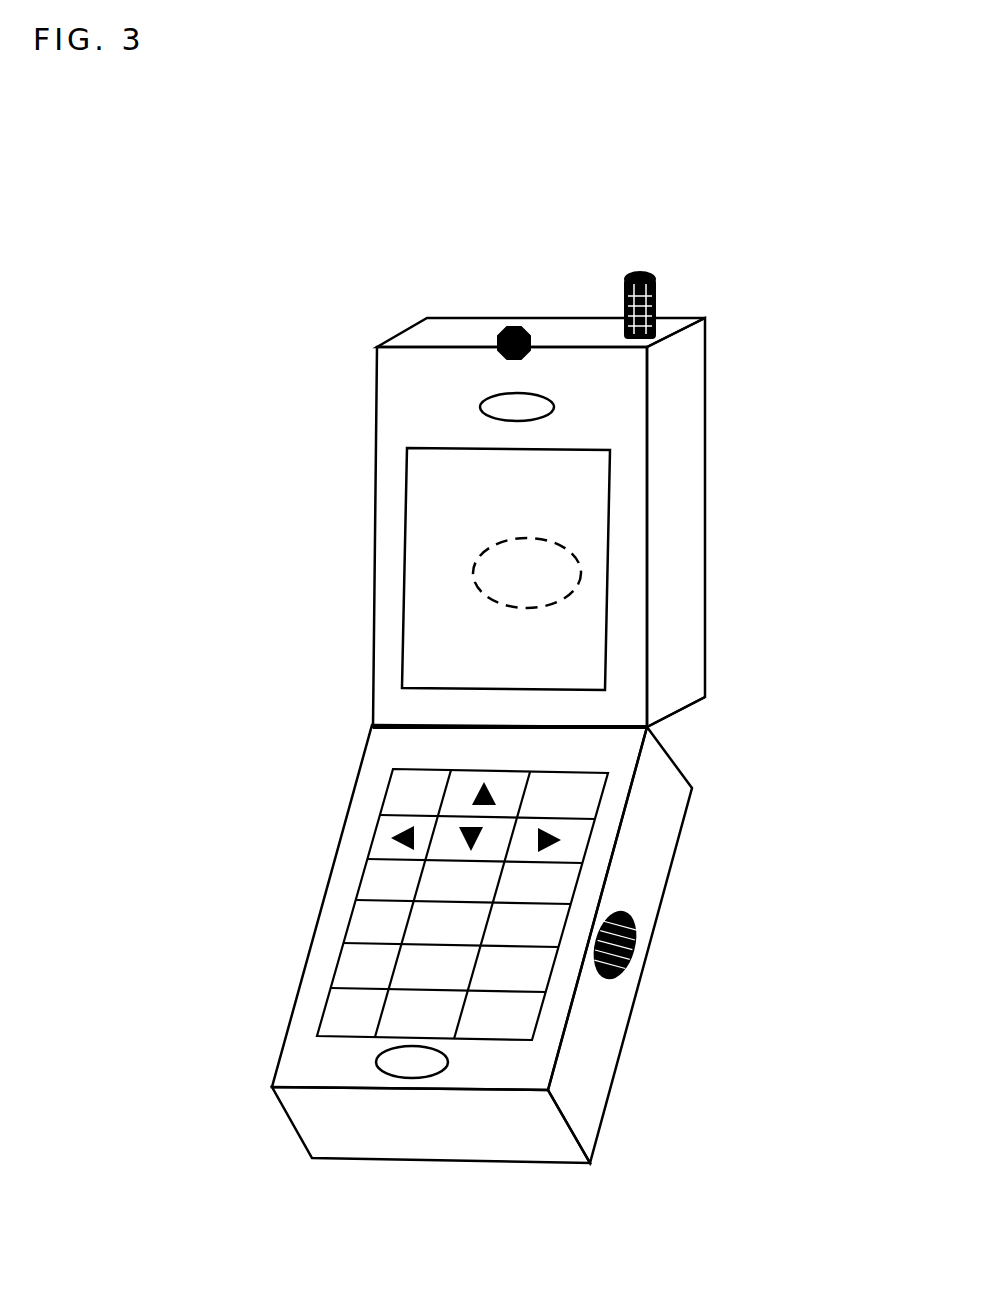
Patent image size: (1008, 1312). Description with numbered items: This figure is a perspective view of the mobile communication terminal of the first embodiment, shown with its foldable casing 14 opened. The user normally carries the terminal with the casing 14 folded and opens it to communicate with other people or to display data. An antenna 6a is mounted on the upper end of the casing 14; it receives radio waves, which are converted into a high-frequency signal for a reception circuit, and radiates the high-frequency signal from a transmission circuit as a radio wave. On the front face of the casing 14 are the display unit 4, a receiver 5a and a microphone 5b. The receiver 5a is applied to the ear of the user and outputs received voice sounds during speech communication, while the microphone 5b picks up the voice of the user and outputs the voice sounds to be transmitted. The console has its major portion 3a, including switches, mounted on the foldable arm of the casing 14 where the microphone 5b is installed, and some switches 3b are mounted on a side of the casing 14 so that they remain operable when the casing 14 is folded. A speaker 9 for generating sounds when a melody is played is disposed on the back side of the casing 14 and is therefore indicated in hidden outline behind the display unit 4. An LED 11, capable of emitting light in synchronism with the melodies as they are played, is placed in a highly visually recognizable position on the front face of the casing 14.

The major portion of console 3a is at (387, 904).
The switches 3b is at (691, 952).
The display unit 4 is at (430, 569).
The receiver 5a is at (393, 389).
The microphone 5b is at (275, 1060).
The antenna 6a is at (711, 269).
The speaker 9 is at (639, 573).
The LED 11 is at (483, 273).
The casing 14 is at (609, 522).